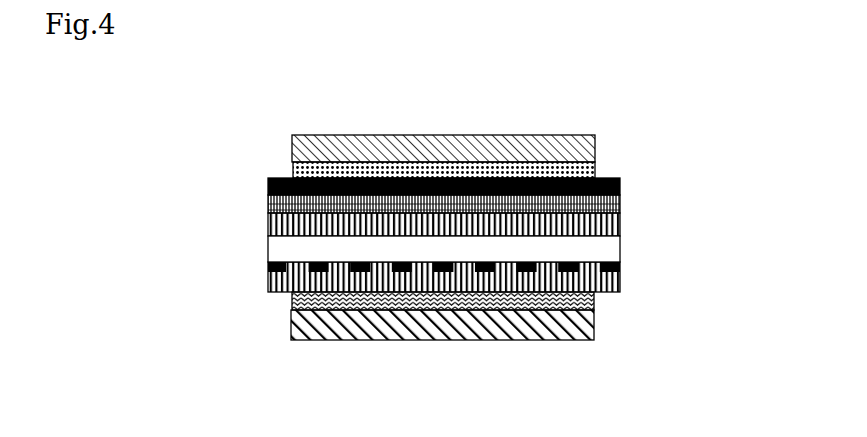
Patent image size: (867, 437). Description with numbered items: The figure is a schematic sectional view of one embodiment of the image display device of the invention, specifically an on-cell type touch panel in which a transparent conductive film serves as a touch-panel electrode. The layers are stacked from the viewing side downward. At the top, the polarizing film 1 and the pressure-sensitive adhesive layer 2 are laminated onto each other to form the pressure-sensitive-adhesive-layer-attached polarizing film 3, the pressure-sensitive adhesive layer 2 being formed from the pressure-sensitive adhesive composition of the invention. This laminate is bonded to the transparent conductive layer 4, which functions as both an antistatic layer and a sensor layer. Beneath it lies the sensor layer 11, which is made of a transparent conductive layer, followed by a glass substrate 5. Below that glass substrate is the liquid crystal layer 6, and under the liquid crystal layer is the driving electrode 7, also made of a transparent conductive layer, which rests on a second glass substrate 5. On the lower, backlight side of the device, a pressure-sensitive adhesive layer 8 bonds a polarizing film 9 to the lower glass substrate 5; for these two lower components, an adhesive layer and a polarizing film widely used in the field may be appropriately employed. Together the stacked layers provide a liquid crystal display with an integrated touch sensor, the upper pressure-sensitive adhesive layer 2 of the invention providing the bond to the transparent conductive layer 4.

The polarizing film 1 is at (580, 150).
The pressure-sensitive adhesive layer 2 is at (586, 170).
The pressure-sensitive-adhesive-layer-attached polarizing film 3 is at (509, 117).
The transparent conductive layer 4 is at (622, 182).
The sensor layer 11 is at (622, 201).
The glass substrate 5 is at (276, 222).
The liquid crystal layer 6 is at (608, 251).
The driving electrode 7 is at (617, 269).
The pressure-sensitive adhesive layer 8 is at (292, 303).
The polarizing film 9 is at (440, 330).